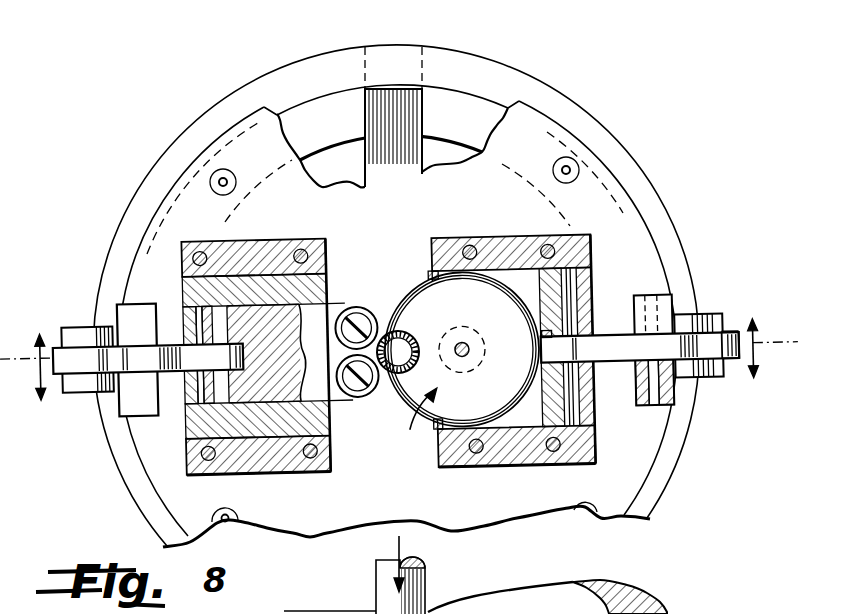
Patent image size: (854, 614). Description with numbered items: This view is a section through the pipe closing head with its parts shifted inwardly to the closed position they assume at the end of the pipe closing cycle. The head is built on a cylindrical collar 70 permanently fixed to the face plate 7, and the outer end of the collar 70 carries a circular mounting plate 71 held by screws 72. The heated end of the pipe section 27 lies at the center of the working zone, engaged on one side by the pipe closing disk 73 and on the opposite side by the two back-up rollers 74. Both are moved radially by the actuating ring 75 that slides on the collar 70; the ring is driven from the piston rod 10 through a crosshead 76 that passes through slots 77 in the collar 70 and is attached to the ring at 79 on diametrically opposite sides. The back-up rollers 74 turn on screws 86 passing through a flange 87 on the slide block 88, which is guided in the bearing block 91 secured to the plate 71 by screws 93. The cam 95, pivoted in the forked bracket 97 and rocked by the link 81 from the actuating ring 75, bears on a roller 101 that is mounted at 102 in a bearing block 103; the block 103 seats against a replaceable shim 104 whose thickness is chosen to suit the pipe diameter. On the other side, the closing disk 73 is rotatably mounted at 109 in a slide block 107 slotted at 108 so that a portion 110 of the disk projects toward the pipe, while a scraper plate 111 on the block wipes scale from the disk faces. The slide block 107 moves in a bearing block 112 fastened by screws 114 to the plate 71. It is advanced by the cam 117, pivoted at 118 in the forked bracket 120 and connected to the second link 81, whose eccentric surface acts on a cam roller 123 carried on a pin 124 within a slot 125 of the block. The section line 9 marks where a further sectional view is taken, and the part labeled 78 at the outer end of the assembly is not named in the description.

The face plate 7 is at (636, 158).
The section line 9- 9 is at (399, 359).
The piston rod 10 is at (387, 588).
The pipe section 27 is at (414, 338).
The cylindrical collar 70 is at (471, 107).
The circular mounting plate 71 is at (637, 204).
The screws 72 is at (233, 172).
The pipe closing disk 73 is at (432, 425).
The back-up rollers 74 is at (397, 331).
The actuating ring 75 is at (217, 115).
The crosshead 76 is at (402, 158).
The slots 77 is at (366, 108).
The shaft end nut 78 is at (733, 339).
The attachment point 79 is at (423, 72).
The link 81 is at (76, 326).
The screws 86 is at (357, 306).
The flange 87 is at (328, 354).
The slide block 88 is at (316, 317).
The bearing block 91 is at (276, 247).
The screws 93 is at (203, 247).
The cam 95 is at (138, 359).
The forked bracket 97 is at (127, 313).
The roller 101 is at (172, 370).
The roller mounting 102 is at (184, 312).
The bearing block 103 is at (181, 400).
The replaceable shim 104 is at (228, 309).
The slide block 107 is at (519, 468).
The slot 108 is at (533, 287).
The disk mounting 109 is at (463, 358).
The projecting portion of disk 110 is at (408, 312).
The scraper plate 111 is at (436, 465).
The bearing block 112 is at (458, 239).
The screws 114 is at (556, 251).
The cam 117 is at (611, 342).
The cam pivot 118 is at (651, 405).
The forked bracket 120 is at (660, 301).
The cam roller 123 is at (545, 341).
The pin 124 is at (578, 288).
The slot 125 is at (544, 357).